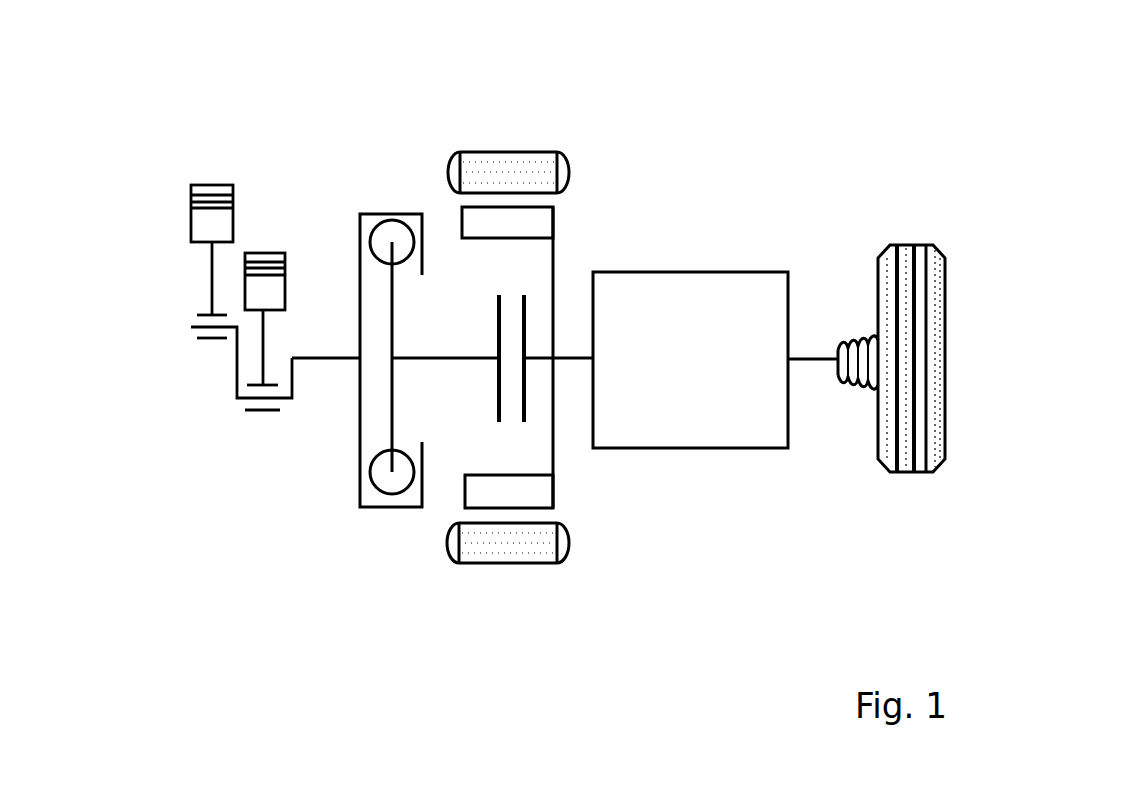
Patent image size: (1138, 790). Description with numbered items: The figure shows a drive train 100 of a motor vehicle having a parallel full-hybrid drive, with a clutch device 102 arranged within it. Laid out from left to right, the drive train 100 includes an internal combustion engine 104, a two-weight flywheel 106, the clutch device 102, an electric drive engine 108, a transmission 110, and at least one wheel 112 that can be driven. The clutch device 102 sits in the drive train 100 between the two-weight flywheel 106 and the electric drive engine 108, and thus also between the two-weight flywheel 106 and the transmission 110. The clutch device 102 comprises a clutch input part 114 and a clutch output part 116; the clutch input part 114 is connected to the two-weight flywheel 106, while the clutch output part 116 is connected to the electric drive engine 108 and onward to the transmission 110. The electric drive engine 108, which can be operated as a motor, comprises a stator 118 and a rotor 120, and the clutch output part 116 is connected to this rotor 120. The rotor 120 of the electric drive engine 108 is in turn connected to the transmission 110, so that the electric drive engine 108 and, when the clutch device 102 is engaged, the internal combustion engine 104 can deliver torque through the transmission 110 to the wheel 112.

The drive train 100 is at (376, 186).
The clutch device 102 is at (518, 383).
The internal combustion engine 104 is at (205, 362).
The two-weight flywheel 106 is at (336, 479).
The electric drive engine 108 is at (496, 582).
The transmission 110 is at (763, 300).
The wheel 112 is at (918, 295).
The clutch input part 114 is at (498, 385).
The clutch output part 116 is at (525, 387).
The stator 118 is at (475, 166).
The rotor 120 is at (515, 215).